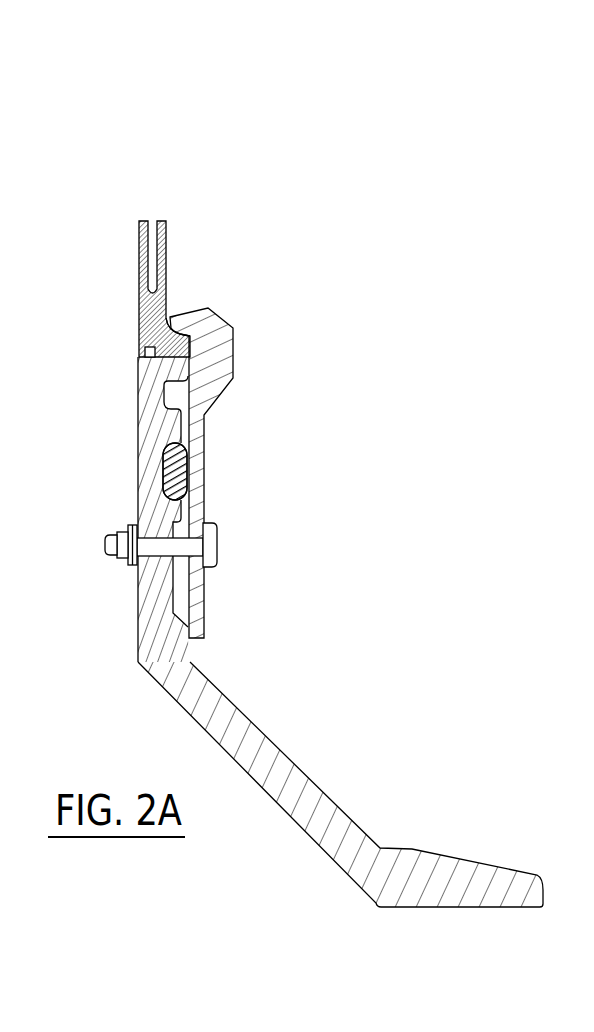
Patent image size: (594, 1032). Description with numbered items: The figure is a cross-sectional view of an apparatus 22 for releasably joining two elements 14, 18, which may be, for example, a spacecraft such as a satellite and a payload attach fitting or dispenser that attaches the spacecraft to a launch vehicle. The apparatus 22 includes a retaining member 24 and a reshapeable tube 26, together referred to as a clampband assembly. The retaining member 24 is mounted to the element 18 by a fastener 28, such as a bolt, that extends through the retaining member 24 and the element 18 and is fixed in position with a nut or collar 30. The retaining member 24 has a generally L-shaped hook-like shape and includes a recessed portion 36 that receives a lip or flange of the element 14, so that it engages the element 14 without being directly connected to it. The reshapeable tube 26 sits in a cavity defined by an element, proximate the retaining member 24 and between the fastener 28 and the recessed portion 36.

The element 14 is at (176, 234).
The element 18 is at (311, 853).
The apparatus for releasably joining elements 22 is at (102, 489).
The retaining member 24 is at (250, 346).
The reshapeable tube 26 is at (192, 472).
The fastener 28 is at (242, 549).
The nut or collar 30 is at (123, 575).
The recessed portion 36 is at (186, 328).